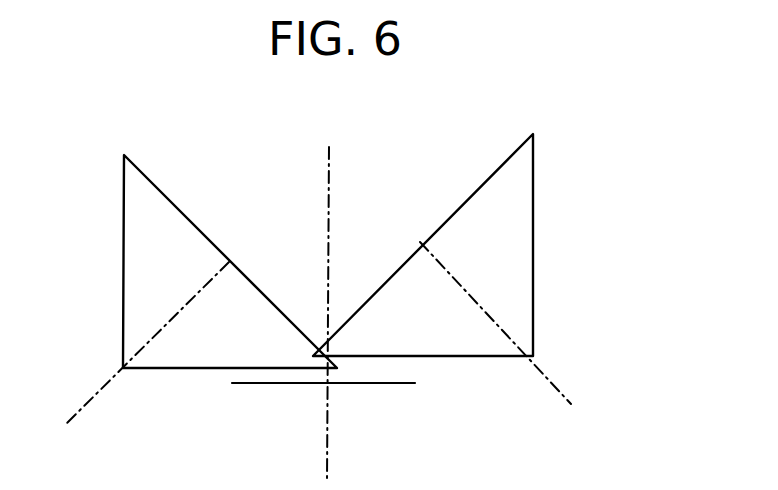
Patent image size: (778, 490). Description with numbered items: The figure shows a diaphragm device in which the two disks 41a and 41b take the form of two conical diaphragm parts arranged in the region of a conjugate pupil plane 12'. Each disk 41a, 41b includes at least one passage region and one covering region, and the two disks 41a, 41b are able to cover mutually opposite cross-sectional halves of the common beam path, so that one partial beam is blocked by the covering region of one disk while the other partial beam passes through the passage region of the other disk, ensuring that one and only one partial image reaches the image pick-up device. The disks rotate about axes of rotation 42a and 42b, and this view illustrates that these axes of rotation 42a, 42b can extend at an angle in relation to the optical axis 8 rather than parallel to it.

The disk 41a is at (123, 280).
The disk 41b is at (533, 293).
The axis of rotation 42a is at (82, 405).
The axis of rotation 42b is at (570, 403).
The conjugate pupil plane 12' is at (335, 412).
The optical axis 8 is at (327, 445).